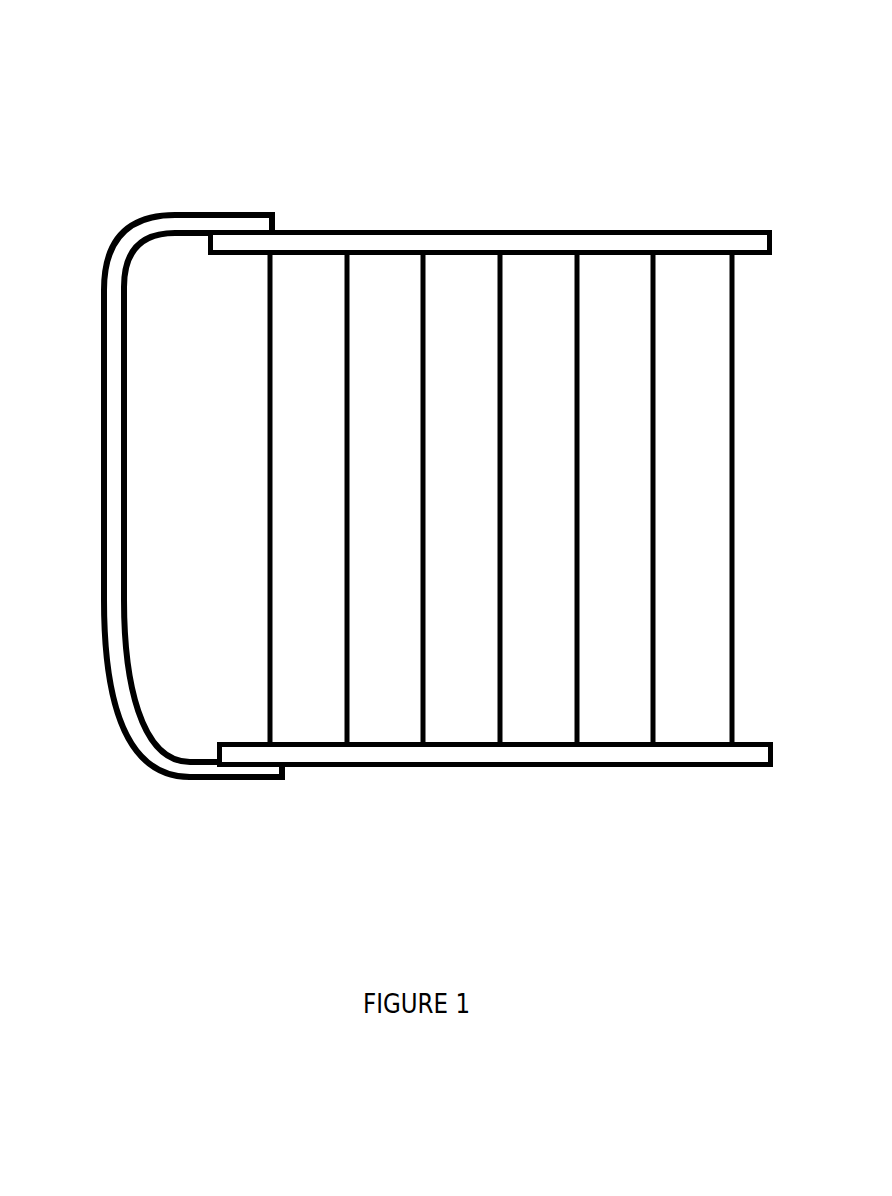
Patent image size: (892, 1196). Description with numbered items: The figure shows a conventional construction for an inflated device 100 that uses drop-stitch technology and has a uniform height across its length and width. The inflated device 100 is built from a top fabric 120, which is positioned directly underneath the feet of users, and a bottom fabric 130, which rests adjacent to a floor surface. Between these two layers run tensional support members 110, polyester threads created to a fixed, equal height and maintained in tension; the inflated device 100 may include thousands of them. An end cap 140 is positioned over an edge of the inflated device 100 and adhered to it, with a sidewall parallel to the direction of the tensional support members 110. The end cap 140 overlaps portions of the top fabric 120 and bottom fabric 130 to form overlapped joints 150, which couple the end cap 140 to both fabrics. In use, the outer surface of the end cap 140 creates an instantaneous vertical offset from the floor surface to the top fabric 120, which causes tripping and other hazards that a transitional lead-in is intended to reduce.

The inflated device 100 is at (105, 55).
The tensional support members 110 is at (577, 292).
The top fabric 120 is at (473, 250).
The bottom fabric 130 is at (460, 745).
The end cap 140 is at (125, 542).
The overlapped joints 150 is at (257, 762).